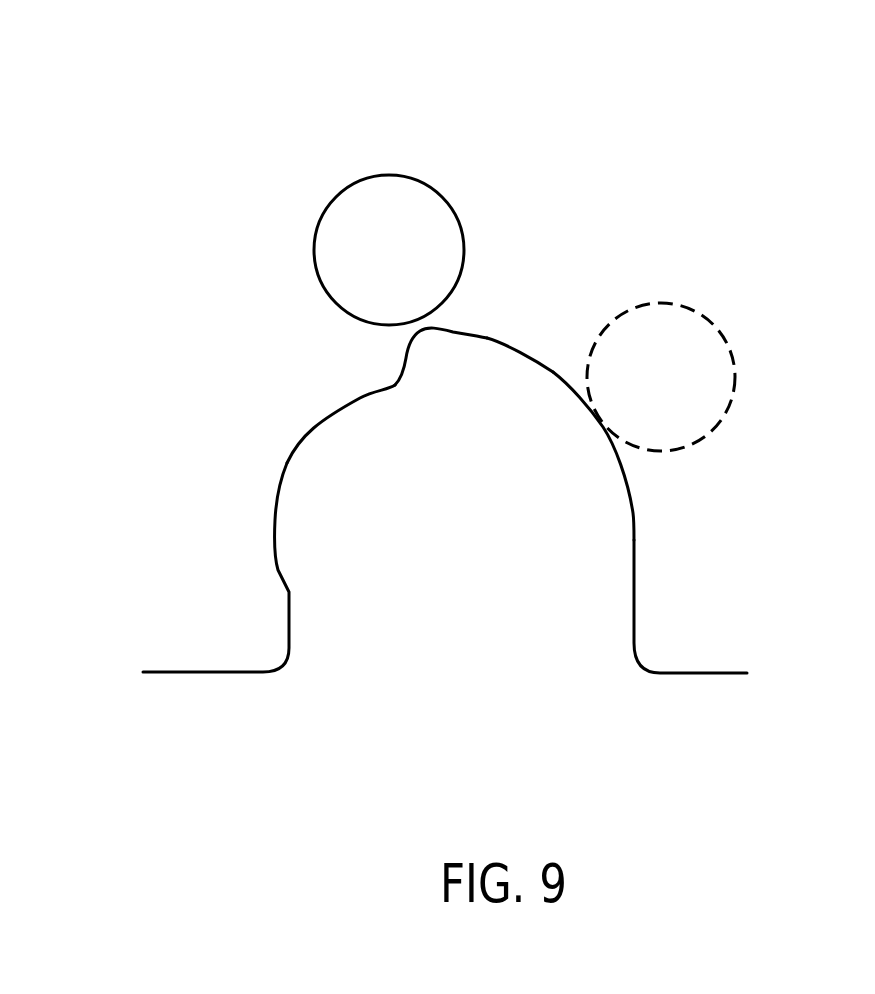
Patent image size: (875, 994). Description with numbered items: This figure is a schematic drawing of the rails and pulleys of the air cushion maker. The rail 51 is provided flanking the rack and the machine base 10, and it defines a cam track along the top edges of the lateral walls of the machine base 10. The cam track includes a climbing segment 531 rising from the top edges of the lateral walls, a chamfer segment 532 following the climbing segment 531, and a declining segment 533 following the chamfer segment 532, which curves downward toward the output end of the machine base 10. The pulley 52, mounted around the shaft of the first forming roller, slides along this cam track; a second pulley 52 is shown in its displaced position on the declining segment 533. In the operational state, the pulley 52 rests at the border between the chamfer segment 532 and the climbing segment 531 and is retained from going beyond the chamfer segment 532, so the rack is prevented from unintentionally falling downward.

The machine base 10 is at (445, 456).
The rail 51 is at (557, 360).
The pulley 52 is at (392, 168).
The climbing segment 531 is at (407, 363).
The chamfer segment 532 is at (427, 338).
The declining segment 533 is at (557, 383).